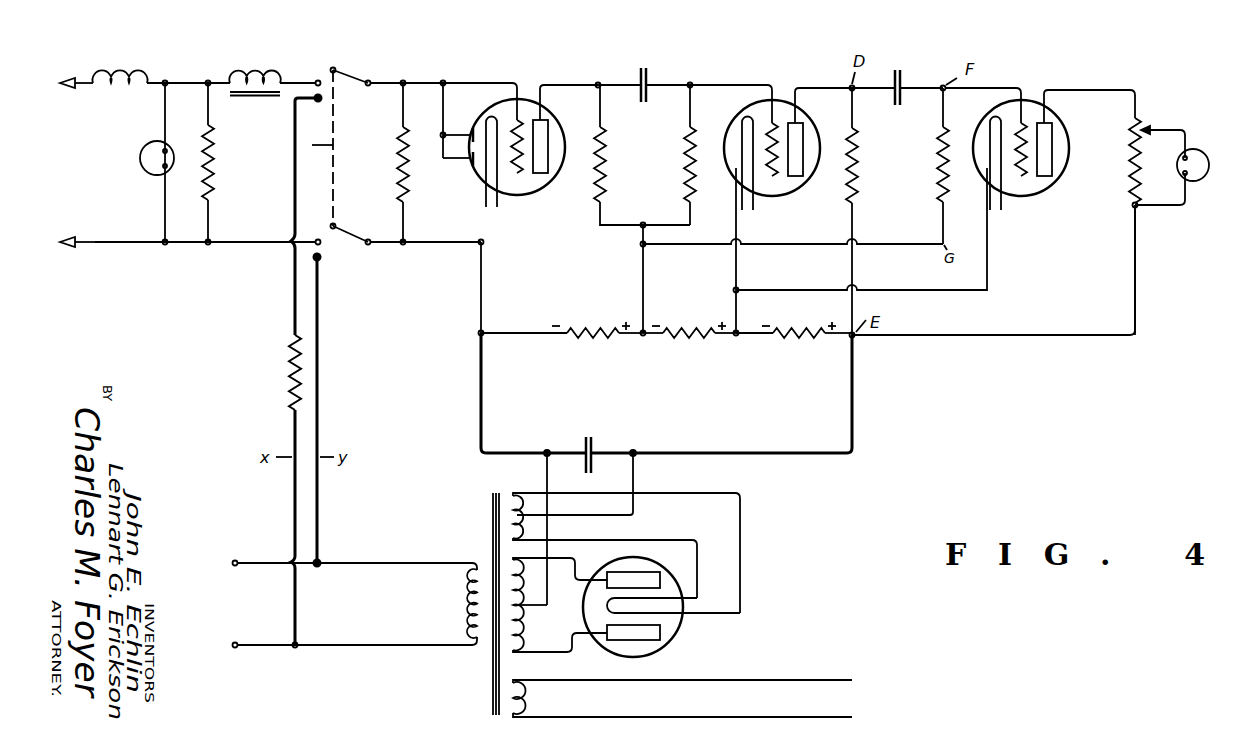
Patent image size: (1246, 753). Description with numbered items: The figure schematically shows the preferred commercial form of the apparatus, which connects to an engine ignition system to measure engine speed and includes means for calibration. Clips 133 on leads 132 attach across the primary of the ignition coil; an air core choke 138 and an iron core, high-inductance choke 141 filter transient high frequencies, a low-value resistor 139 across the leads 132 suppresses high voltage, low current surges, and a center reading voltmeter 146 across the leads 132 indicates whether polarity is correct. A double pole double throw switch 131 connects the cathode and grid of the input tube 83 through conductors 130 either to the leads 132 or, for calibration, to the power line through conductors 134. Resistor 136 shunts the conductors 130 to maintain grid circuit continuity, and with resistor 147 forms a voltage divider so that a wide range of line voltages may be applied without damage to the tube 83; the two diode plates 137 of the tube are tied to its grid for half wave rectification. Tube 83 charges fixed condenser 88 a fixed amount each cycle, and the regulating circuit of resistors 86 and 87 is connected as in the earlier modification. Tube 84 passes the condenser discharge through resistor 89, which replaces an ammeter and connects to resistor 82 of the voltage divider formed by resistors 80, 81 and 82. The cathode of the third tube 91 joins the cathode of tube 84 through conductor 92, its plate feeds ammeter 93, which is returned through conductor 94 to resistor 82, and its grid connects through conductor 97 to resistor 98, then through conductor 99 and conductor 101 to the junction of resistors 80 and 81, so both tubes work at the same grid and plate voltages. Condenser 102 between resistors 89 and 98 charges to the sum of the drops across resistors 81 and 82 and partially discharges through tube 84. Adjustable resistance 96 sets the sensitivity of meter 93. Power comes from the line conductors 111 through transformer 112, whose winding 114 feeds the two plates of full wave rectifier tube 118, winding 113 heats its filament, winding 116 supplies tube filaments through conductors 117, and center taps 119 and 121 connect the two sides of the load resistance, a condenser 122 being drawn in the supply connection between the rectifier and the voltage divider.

The resistor 80 is at (596, 340).
The resistor 81 is at (694, 340).
The resistor 82 is at (797, 340).
The input tube 83 is at (533, 197).
The tube 84 is at (800, 193).
The resistor 86 is at (603, 150).
The resistor 87 is at (686, 180).
The fixed condenser 88 is at (652, 75).
The resistor 89 is at (858, 149).
The third tube 91 is at (1057, 185).
The conductor 92 is at (882, 290).
The ammeter 93 is at (1200, 181).
The conductor 94 is at (1020, 338).
The adjustable resistance 96 is at (1124, 149).
The conductor 97 is at (1000, 86).
The resistor 98 is at (935, 177).
The conductor 99 is at (812, 246).
The conductor 101 is at (641, 270).
The condenser 102 is at (907, 75).
The conductors of power line 111 is at (407, 565).
The power transformer 112 is at (486, 556).
The secondary winding 113 is at (515, 491).
The secondary winding 114 is at (514, 649).
The secondary winding 116 is at (522, 698).
The conductors 117 is at (818, 682).
The full wave rectifier tube 118 is at (676, 634).
The center tap 119 is at (479, 398).
The center tap 121 is at (855, 400).
The filter condenser 122 is at (597, 440).
The conductors 130 is at (420, 81).
The double pole double throw switch 131 is at (333, 145).
The leads 132 is at (188, 79).
The clips 133 is at (77, 76).
The conductors 134 is at (292, 298).
The resistor 136 is at (397, 166).
The diode plates 137 is at (468, 166).
The air core choke 138 is at (140, 74).
The resistor 139 is at (215, 160).
The iron core choke 141 is at (249, 72).
The center reading voltmeter 146 is at (140, 158).
The resistor 147 is at (291, 375).